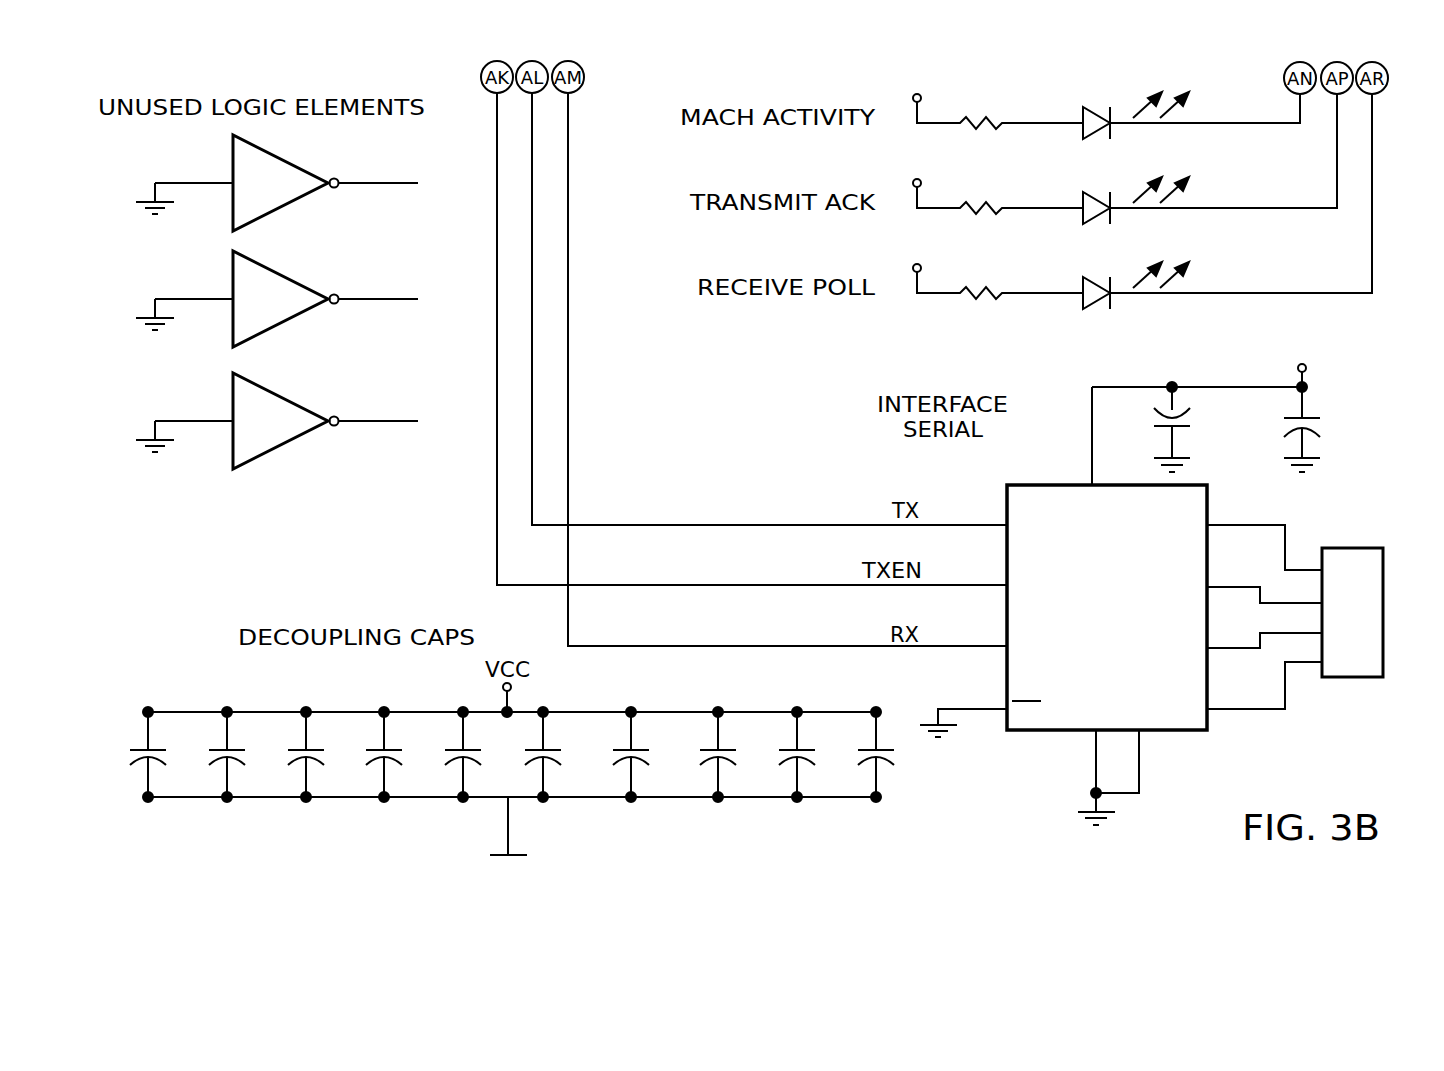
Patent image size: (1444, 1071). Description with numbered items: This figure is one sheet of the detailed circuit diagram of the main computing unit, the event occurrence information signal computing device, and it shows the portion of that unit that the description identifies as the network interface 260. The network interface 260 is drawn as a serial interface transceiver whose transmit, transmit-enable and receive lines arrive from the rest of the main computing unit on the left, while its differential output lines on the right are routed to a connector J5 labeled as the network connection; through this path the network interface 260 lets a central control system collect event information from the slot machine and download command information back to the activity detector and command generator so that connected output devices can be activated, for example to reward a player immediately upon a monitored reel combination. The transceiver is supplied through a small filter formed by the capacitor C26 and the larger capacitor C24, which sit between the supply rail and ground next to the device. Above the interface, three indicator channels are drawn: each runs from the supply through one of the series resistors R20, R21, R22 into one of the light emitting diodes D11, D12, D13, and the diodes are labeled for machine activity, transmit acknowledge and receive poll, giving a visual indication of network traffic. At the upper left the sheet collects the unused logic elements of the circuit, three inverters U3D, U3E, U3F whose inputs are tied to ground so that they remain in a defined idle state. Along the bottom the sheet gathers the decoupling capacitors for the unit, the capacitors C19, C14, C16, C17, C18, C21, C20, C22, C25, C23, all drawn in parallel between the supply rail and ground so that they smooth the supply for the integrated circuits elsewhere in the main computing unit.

The network interface 260 is at (1207, 730).
The unused inverter U3D (74HC14) U3D is at (277, 181).
The unused inverter U3E (74HC14) U3E is at (277, 298).
The unused inverter U3F (74HC14) U3F is at (277, 420).
The resistor R20 470 ohm R20 is at (989, 110).
The resistor R21 470 ohm R21 is at (989, 195).
The resistor R22 470 ohm R22 is at (989, 280).
The LED D11 machine activity D11 is at (1167, 122).
The LED D12 transmit ack D12 is at (1186, 166).
The LED D13 receive poll D13 is at (1203, 208).
The network connector J5 is at (1358, 618).
The capacitor C26 0.1uF C26 is at (1210, 427).
The capacitor C24 10uF C24 is at (1337, 405).
The decoupling capacitor C19 is at (141, 768).
The decoupling capacitor C14 is at (220, 768).
The decoupling capacitor C16 is at (299, 768).
The decoupling capacitor C17 is at (377, 768).
The decoupling capacitor C18 is at (456, 768).
The decoupling capacitor C21 is at (537, 768).
The decoupling capacitor C20 is at (622, 768).
The decoupling capacitor C22 is at (709, 768).
The decoupling capacitor C25 is at (789, 768).
The decoupling capacitor C23 is at (867, 768).